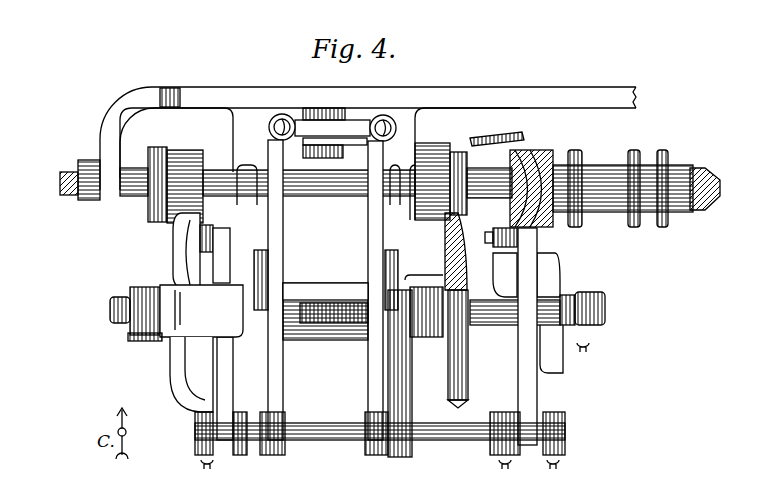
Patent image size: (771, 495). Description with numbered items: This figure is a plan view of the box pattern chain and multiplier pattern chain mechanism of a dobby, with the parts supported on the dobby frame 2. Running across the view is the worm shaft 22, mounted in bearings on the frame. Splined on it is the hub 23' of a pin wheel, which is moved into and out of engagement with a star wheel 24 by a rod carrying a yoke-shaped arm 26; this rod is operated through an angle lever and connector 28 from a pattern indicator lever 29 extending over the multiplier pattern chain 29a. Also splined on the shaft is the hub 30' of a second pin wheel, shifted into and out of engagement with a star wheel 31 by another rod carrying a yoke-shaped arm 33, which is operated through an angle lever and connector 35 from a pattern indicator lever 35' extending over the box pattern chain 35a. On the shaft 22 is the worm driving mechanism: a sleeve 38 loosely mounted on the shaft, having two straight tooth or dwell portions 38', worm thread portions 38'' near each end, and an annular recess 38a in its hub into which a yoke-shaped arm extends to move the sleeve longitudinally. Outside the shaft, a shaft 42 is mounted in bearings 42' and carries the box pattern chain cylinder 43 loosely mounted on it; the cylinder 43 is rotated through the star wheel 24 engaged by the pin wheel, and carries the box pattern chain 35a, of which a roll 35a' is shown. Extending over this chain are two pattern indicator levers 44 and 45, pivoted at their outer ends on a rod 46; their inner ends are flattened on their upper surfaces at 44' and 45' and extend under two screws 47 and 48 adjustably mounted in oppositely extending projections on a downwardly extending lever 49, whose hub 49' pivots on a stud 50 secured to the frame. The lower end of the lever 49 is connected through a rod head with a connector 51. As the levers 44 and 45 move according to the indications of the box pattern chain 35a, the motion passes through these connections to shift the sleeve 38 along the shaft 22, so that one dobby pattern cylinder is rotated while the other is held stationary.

The dobby frame 2 is at (103, 134).
The worm shaft 22 is at (66, 186).
The hub of pin wheel 23' is at (198, 178).
The star wheel 24 is at (173, 356).
The yoke-shaped arm 26 is at (160, 152).
The connector 28 is at (503, 244).
The pattern indicator lever 29 is at (531, 262).
The multiplier pattern chain 29a is at (584, 291).
The hub of second pin wheel 30' is at (442, 169).
The star wheel 31 is at (456, 374).
The yoke-shaped arm 33 is at (461, 155).
The connector 35 is at (168, 251).
The pattern indicator lever 35' is at (194, 332).
The box pattern chain 35a is at (325, 301).
The roll of pattern chain 35a' is at (325, 274).
The sleeve 38 is at (638, 179).
The straight tooth or dwell portions 38' is at (591, 179).
The worm thread portions 38'' is at (539, 180).
The annular recess 38a is at (645, 160).
The shaft 42 is at (352, 312).
The bearings 42' is at (260, 311).
The box pattern chain cylinder 43 is at (262, 258).
The pattern indicator lever 44 is at (288, 290).
The flattened inner end 44' is at (233, 159).
The pattern indicator lever 45 is at (357, 290).
The flattened inner end 45' is at (411, 169).
The rod 46 is at (323, 442).
The screw 47 is at (276, 118).
The screw 48 is at (381, 118).
The lever 49 is at (340, 101).
The hub 49' is at (326, 93).
The stud 50 is at (316, 149).
The connector 51 is at (510, 140).